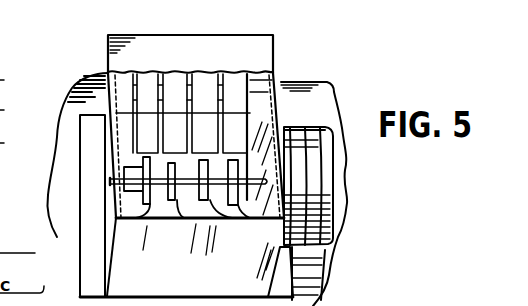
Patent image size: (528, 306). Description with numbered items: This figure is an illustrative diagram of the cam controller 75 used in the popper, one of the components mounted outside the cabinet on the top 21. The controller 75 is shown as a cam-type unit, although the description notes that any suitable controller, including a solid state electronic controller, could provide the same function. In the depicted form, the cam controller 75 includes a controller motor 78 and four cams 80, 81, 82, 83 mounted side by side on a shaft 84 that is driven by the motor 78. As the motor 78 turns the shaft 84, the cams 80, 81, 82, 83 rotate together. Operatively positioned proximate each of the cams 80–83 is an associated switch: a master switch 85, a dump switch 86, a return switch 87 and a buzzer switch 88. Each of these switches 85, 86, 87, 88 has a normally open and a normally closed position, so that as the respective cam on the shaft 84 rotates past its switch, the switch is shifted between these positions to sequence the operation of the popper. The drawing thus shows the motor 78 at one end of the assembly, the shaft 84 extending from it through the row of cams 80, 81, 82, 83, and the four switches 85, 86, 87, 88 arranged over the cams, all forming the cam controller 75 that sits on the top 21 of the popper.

The top 21 is at (316, 97).
The cam controller 75 is at (284, 64).
The controller motor 78 is at (317, 199).
The cam 80 is at (248, 224).
The cam 81 is at (226, 223).
The cam 82 is at (171, 222).
The cam 83 is at (136, 222).
The shaft 84 is at (118, 183).
The master switch 85 is at (239, 77).
The dump switch 86 is at (203, 80).
The return switch 87 is at (170, 80).
The buzzer switch 88 is at (144, 88).